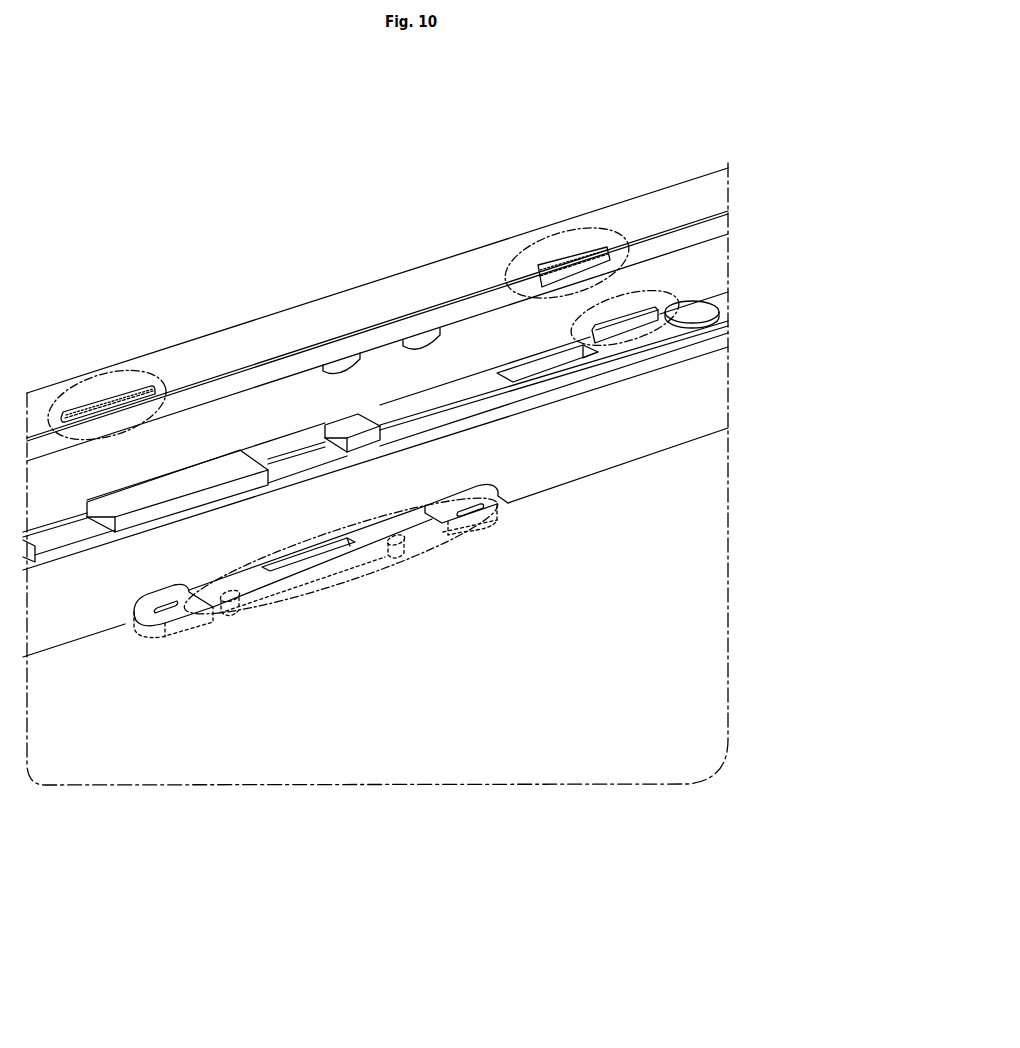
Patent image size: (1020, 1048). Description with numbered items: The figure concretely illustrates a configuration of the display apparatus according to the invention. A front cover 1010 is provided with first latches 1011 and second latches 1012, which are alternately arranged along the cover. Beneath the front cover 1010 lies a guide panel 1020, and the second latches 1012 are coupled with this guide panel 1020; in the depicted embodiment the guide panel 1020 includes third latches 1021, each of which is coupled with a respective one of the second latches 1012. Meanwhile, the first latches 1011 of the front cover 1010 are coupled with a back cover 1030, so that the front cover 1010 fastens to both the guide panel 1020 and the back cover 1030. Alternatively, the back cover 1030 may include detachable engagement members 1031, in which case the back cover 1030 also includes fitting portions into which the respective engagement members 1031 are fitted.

The front cover 1010 is at (370, 318).
The first latches 1011 is at (130, 370).
The second latches 1012 is at (557, 235).
The guide panel 1020 is at (437, 398).
The third latches 1021 is at (658, 332).
The back cover 1030 is at (527, 507).
The engagement members 1031 is at (333, 577).